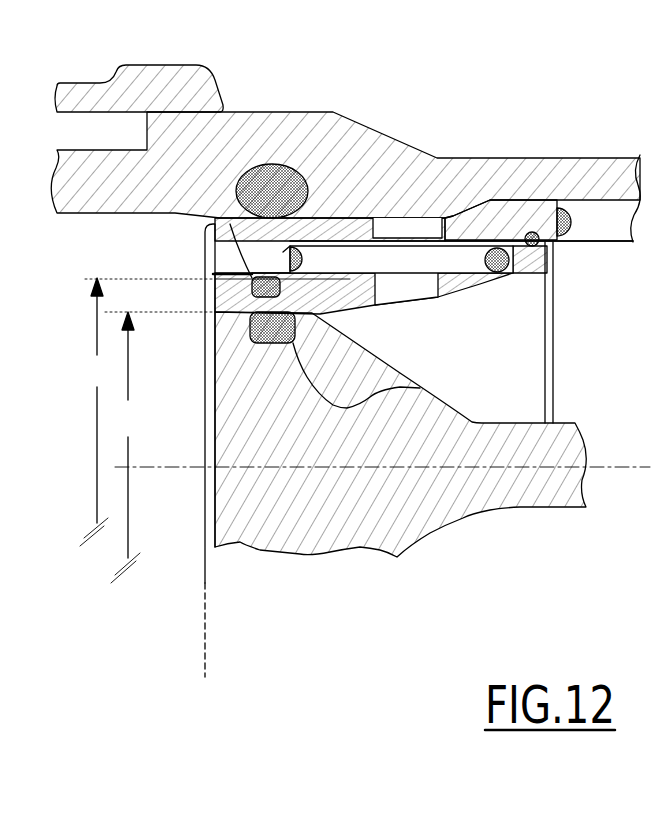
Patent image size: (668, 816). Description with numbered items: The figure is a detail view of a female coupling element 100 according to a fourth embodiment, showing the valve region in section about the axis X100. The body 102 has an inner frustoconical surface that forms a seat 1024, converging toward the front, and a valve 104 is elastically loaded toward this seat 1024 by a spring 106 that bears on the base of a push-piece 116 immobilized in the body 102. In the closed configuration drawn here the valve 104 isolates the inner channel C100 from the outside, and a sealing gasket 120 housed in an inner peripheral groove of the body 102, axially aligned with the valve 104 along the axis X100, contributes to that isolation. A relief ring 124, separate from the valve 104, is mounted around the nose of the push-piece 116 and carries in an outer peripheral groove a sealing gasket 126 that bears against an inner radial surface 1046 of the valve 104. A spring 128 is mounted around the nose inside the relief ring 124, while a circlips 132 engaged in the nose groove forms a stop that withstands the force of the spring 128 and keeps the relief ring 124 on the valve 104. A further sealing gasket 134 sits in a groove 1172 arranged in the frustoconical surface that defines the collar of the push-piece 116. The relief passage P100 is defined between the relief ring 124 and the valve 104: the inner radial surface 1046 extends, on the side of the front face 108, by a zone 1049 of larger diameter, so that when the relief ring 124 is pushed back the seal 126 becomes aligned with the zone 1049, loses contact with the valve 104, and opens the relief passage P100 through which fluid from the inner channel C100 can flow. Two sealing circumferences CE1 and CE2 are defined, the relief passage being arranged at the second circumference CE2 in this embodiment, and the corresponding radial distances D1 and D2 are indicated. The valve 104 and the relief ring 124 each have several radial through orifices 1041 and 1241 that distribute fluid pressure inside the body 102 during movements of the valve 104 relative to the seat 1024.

The groove 1172 is at (222, 217).
The sealing gasket 120 is at (285, 190).
The valve 104 is at (348, 217).
The radial through orifices 1041 is at (418, 212).
The body 102 is at (500, 173).
The seat 1024 is at (533, 223).
The spring 106 is at (593, 213).
The relief passage P100 is at (213, 272).
The second sealing circumference CE2 is at (192, 269).
The first sealing circumference CE1 is at (127, 310).
The second distance D2 is at (94, 412).
The first distance D1 is at (125, 447).
The front face 108 is at (203, 440).
The sealing gasket 126 is at (283, 295).
The radial through orifices 1241 is at (427, 298).
The spring 128 is at (499, 260).
The circlips 132 is at (534, 241).
The relief ring 124 is at (480, 284).
The sealing gasket 134 is at (420, 388).
The inner channel C100 is at (623, 402).
The axis X100 is at (630, 467).
The inner radial surface 1046 is at (256, 305).
The zone 1049 is at (231, 290).
The push-piece 116 is at (450, 502).
The female coupling element 100 is at (419, 592).